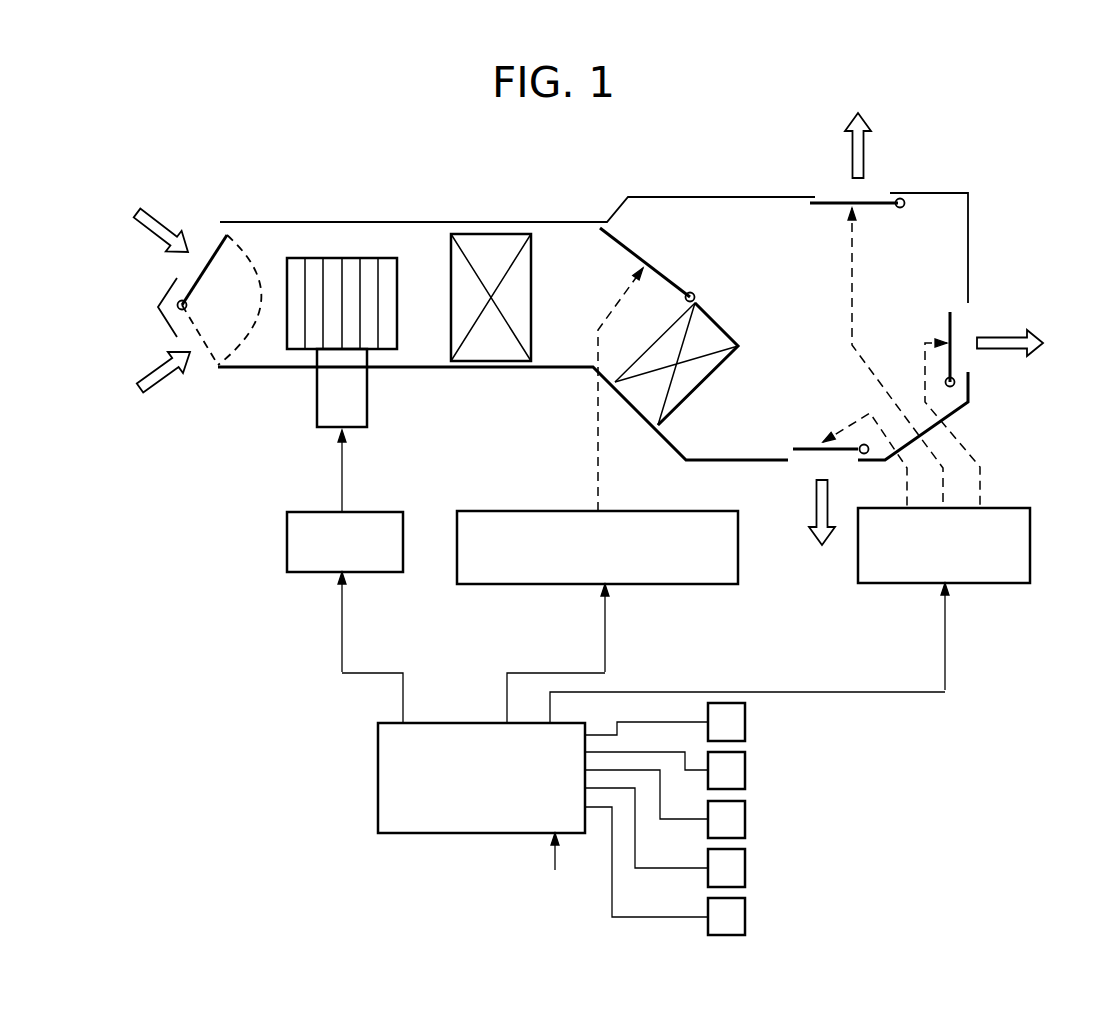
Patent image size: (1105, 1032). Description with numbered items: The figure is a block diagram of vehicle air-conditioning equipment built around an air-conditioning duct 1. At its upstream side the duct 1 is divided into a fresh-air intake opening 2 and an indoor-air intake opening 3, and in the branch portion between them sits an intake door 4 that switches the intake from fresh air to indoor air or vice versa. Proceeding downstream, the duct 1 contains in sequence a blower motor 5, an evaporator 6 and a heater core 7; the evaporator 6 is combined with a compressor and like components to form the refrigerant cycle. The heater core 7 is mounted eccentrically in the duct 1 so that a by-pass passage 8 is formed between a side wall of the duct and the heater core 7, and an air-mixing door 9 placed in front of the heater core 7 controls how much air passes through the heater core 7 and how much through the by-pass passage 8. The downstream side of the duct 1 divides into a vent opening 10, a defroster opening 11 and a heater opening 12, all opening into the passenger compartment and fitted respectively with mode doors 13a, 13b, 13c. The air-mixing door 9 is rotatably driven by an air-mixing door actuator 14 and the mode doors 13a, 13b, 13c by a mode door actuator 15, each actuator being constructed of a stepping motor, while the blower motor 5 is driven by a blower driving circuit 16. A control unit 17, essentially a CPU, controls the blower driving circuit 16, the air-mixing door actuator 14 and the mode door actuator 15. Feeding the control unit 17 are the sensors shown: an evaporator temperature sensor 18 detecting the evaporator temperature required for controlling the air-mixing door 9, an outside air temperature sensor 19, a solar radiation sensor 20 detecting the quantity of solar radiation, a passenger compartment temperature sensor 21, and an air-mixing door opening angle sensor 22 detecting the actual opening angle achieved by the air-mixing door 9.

The air-conditioning duct 1 is at (440, 222).
The fresh-air intake opening 2 is at (200, 235).
The indoor-air intake opening 3 is at (200, 370).
The intake door 4 is at (203, 265).
The blower motor 5 is at (368, 399).
The evaporator 6 is at (500, 237).
The heater core 7 is at (682, 393).
The by-pass passage 8 is at (720, 258).
The air-mixing door 9 is at (602, 226).
The vent opening 10 is at (968, 354).
The defroster opening 11 is at (881, 189).
The heater opening 12 is at (810, 462).
The mode door 13a is at (952, 317).
The mode door 13b is at (820, 206).
The mode door 13c is at (802, 447).
The air-mixing door actuator 14 is at (646, 509).
The mode door actuator 15 is at (1032, 548).
The blower driving circuit 16 is at (366, 510).
The control unit 17 is at (378, 785).
The evaporator temperature sensor 18 is at (746, 722).
The outside air temperature sensor 19 is at (746, 770).
The solar radiation sensor 20 is at (746, 820).
The passenger compartment temperature sensor 21 is at (746, 868).
The air-mixing door opening angle sensor 22 is at (746, 916).